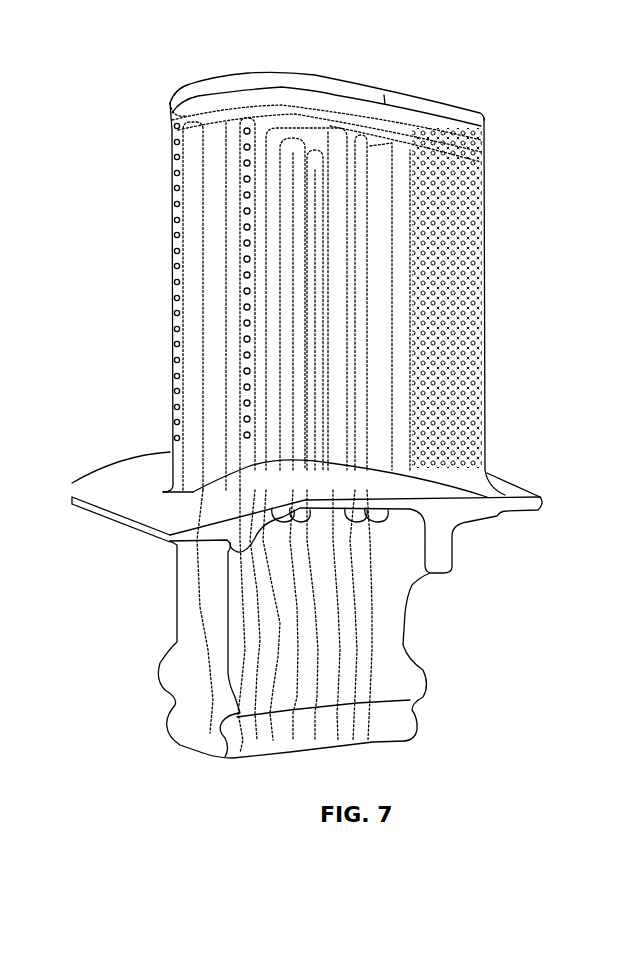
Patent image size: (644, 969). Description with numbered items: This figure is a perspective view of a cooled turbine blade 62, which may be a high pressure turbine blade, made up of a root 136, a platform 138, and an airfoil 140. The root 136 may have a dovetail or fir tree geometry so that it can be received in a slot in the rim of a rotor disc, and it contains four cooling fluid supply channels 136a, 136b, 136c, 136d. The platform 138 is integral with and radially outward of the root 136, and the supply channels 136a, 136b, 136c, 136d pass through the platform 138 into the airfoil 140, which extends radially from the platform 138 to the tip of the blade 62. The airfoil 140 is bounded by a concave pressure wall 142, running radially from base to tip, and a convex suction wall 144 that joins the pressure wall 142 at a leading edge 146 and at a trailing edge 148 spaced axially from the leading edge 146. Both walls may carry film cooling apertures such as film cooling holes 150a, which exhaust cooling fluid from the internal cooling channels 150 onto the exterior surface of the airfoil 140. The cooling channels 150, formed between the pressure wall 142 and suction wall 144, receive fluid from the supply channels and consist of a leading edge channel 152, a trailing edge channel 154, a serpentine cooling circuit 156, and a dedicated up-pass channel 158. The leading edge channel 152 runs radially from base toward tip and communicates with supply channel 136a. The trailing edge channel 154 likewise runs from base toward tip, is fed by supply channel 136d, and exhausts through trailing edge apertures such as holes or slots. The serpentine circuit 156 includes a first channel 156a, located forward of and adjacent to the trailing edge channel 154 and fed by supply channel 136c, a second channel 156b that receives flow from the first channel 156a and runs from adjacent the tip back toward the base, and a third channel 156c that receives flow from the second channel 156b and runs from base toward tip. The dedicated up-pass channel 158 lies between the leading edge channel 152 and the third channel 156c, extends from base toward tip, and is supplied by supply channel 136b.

The cooled turbine blade 62 is at (383, 84).
The root 136 is at (176, 598).
The cooling fluid supply channel 136a is at (253, 643).
The cooling fluid supply channel 136b is at (290, 637).
The cooling fluid supply channel 136c is at (330, 658).
The cooling fluid supply channel 136d is at (363, 677).
The platform 138 is at (545, 499).
The airfoil 140 is at (490, 300).
The concave pressure wall 142 is at (382, 215).
The convex suction wall 144 is at (220, 214).
The leading edge 146 is at (170, 268).
The trailing edge 148 is at (487, 358).
The cooling channels 150 is at (337, 182).
The film cooling holes 150a is at (247, 191).
The leading edge channel 152 is at (217, 362).
The trailing edge channel 154 is at (380, 405).
The serpentine cooling circuit 156 is at (350, 174).
The first channel 156a is at (340, 265).
The second channel 156b is at (303, 328).
The third channel 156c is at (280, 388).
The dedicated up-pass channel 158 is at (172, 117).